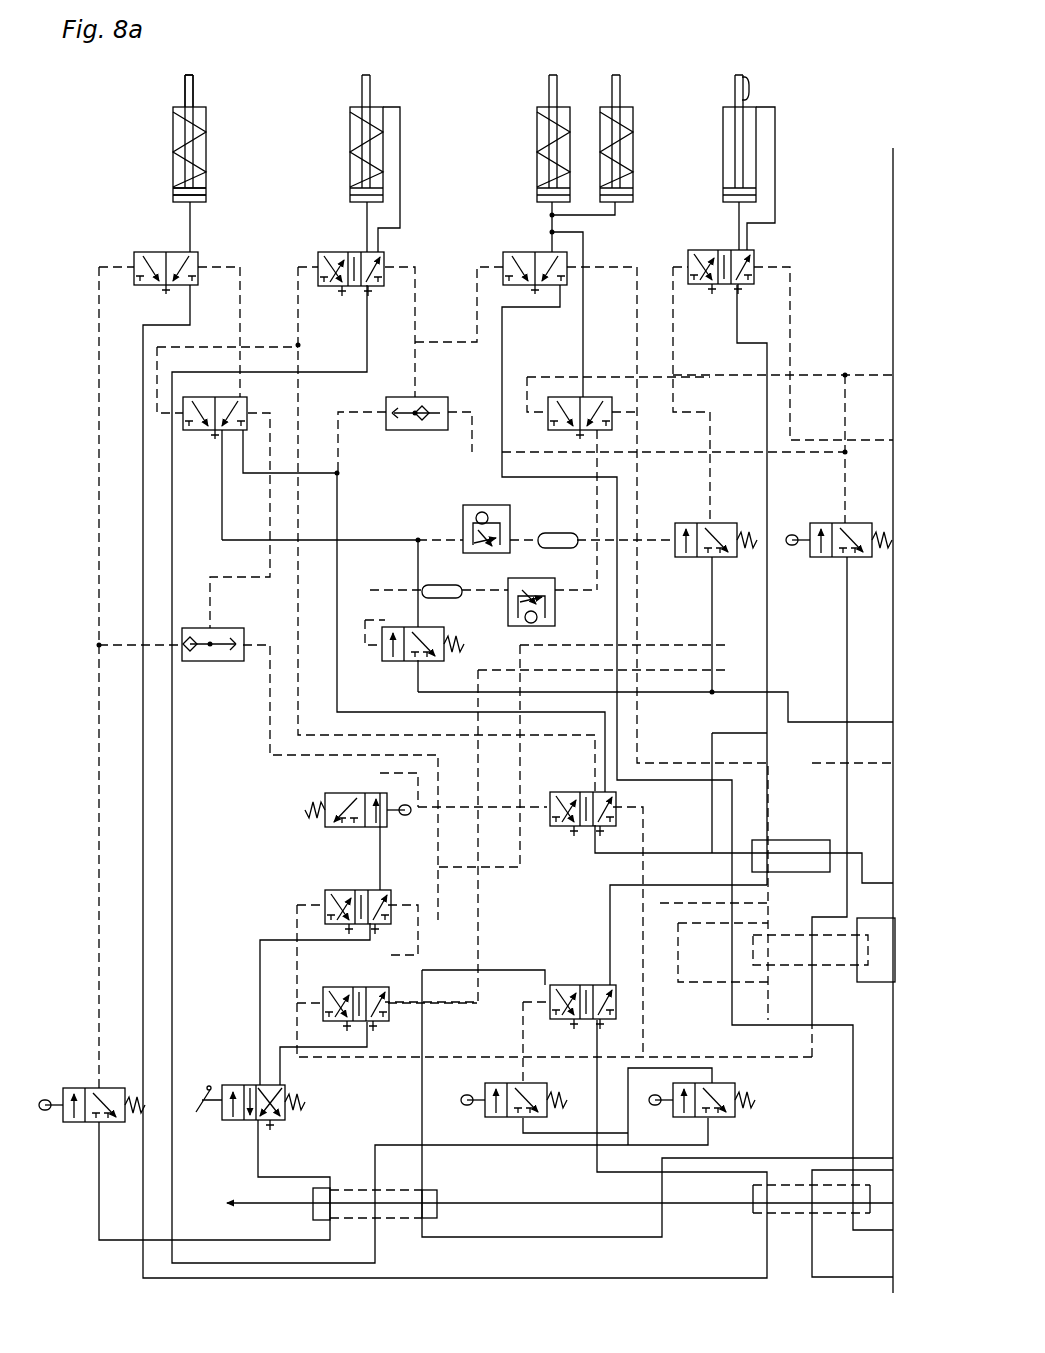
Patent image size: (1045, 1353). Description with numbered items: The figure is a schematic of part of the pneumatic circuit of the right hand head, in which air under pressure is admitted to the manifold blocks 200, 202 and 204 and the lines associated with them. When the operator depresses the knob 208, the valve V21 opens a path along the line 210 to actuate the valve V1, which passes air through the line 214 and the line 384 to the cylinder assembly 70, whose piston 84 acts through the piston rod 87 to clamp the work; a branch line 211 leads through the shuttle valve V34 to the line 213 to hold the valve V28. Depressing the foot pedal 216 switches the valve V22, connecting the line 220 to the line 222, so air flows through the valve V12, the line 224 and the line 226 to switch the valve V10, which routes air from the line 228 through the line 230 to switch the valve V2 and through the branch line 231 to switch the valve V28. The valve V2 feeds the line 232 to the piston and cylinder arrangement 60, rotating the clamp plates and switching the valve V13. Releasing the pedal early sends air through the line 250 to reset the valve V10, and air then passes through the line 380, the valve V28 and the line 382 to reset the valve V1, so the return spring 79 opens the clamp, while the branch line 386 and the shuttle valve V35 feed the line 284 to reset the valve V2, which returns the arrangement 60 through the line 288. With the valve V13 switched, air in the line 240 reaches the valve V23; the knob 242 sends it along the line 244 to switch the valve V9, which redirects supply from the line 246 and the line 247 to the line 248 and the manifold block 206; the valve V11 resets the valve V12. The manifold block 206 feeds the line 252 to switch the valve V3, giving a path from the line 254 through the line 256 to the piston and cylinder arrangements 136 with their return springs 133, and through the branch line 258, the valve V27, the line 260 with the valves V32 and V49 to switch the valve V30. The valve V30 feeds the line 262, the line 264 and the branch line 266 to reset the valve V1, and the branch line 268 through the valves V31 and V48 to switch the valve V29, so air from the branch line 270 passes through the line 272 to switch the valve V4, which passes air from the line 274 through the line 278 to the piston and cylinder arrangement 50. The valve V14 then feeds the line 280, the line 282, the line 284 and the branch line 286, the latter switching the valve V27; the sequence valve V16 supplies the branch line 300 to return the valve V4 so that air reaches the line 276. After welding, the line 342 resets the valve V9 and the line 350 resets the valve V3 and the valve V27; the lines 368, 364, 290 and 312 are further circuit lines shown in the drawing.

The cylinder assembly 70 is at (230, 98).
The piston rod 87 is at (185, 90).
The return spring 79 is at (173, 162).
The piston 84 is at (206, 193).
The line 384 is at (193, 230).
The valve V1 is at (140, 253).
The piston and cylinder arrangement 60 is at (386, 98).
The line 288 is at (400, 198).
The branch line 231 is at (365, 228).
The valve V2 is at (318, 255).
The piston and cylinder arrangements 136 is at (525, 105).
The return springs 133 is at (537, 172).
The line 256 is at (552, 225).
The branch line 258 is at (583, 240).
The valve V3 is at (503, 255).
The line 254 is at (510, 307).
The piston and cylinder arrangement 50 is at (770, 95).
The line 276 is at (775, 170).
The line 278 is at (739, 230).
The valve V4 is at (720, 289).
The branch line 300 is at (778, 267).
The line 274 is at (737, 315).
The branch line 286 is at (824, 375).
The line 230 is at (298, 298).
The line 382 is at (240, 323).
The line 232 is at (367, 340).
The line 252 is at (477, 293).
The line 284 is at (415, 332).
The line 350 is at (637, 297).
The valve V28 is at (205, 440).
The branch line 386 is at (355, 410).
The shuttle valve V35 is at (417, 428).
The valve V27 is at (550, 430).
The line 272 is at (673, 398).
The branch line 266 is at (222, 497).
The line 213 is at (270, 510).
The line 264 is at (418, 545).
The branch line 268 is at (435, 538).
The valve V31 is at (479, 514).
The line 260 is at (597, 493).
The valve V48 is at (592, 523).
The valve V29 is at (695, 523).
The valve V14 is at (820, 523).
The line 282 is at (848, 488).
The branch line 270 is at (712, 587).
The valve V49 is at (447, 577).
The valve V32 is at (555, 585).
The valve V30 is at (400, 627).
The shuttle valve V34 is at (226, 628).
The branch line 211 is at (120, 645).
The line 214 is at (143, 697).
The line 210 is at (99, 747).
The pilot line 368 is at (488, 662).
The line 380 is at (450, 692).
The line 262 is at (418, 685).
The sequence valve V16 is at (333, 793).
The line 224 is at (380, 847).
The pilot line 364 is at (415, 875).
The valve V12 is at (355, 890).
The line 226 is at (505, 805).
The valve V10 is at (577, 799).
The line 228 is at (685, 853).
The line 280 is at (847, 745).
The manifold block 204 is at (790, 840).
The line 247 is at (610, 898).
The manifold block 206 is at (848, 972).
The line 248 is at (714, 942).
The line 222 is at (258, 985).
The valve V11 is at (323, 995).
The valve V9 is at (583, 993).
The line 342 is at (695, 1002).
The valve V21 is at (78, 1088).
The knob 208 is at (55, 1110).
The valve V22 is at (235, 1085).
The foot pedal 216 is at (200, 1098).
The line 220 is at (258, 1157).
The line 240 is at (375, 1153).
The line 250 is at (390, 1057).
The line 244 is at (523, 1030).
The valve V23 is at (487, 1090).
The knob 242 is at (465, 1100).
The line 246 is at (597, 1170).
The valve V13 is at (680, 1120).
The line 290 is at (745, 1150).
The line 312 is at (835, 1170).
The manifold block 202 is at (437, 1212).
The manifold block 200 is at (757, 1215).